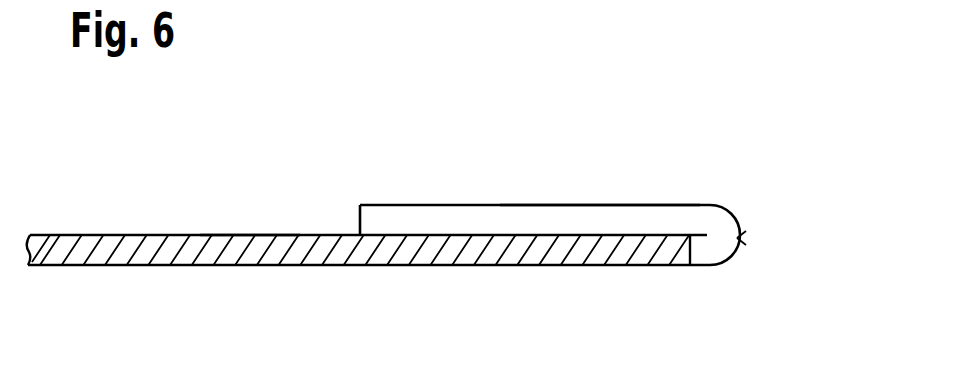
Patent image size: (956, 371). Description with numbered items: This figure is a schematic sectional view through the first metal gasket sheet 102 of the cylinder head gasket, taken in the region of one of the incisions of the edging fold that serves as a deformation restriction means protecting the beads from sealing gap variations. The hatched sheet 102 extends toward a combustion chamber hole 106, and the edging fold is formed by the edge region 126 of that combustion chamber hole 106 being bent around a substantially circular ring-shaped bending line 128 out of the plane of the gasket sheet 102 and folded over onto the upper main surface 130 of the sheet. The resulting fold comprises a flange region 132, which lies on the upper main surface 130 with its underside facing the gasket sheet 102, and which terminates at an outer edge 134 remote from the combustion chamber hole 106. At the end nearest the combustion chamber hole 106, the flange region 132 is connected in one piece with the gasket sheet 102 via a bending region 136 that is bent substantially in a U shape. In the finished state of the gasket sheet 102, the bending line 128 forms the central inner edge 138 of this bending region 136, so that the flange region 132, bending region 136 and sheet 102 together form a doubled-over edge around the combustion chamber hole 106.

The first metal gasket sheet 102 is at (333, 253).
The combustion chamber hole 106 is at (871, 243).
The edge region 126 is at (575, 222).
The bending line 128 is at (740, 234).
The upper main surface 130 is at (250, 235).
The flange region 132 is at (450, 218).
The outer edge 134 is at (358, 218).
The bending region 136 is at (708, 225).
The central inner edge 138 is at (740, 242).